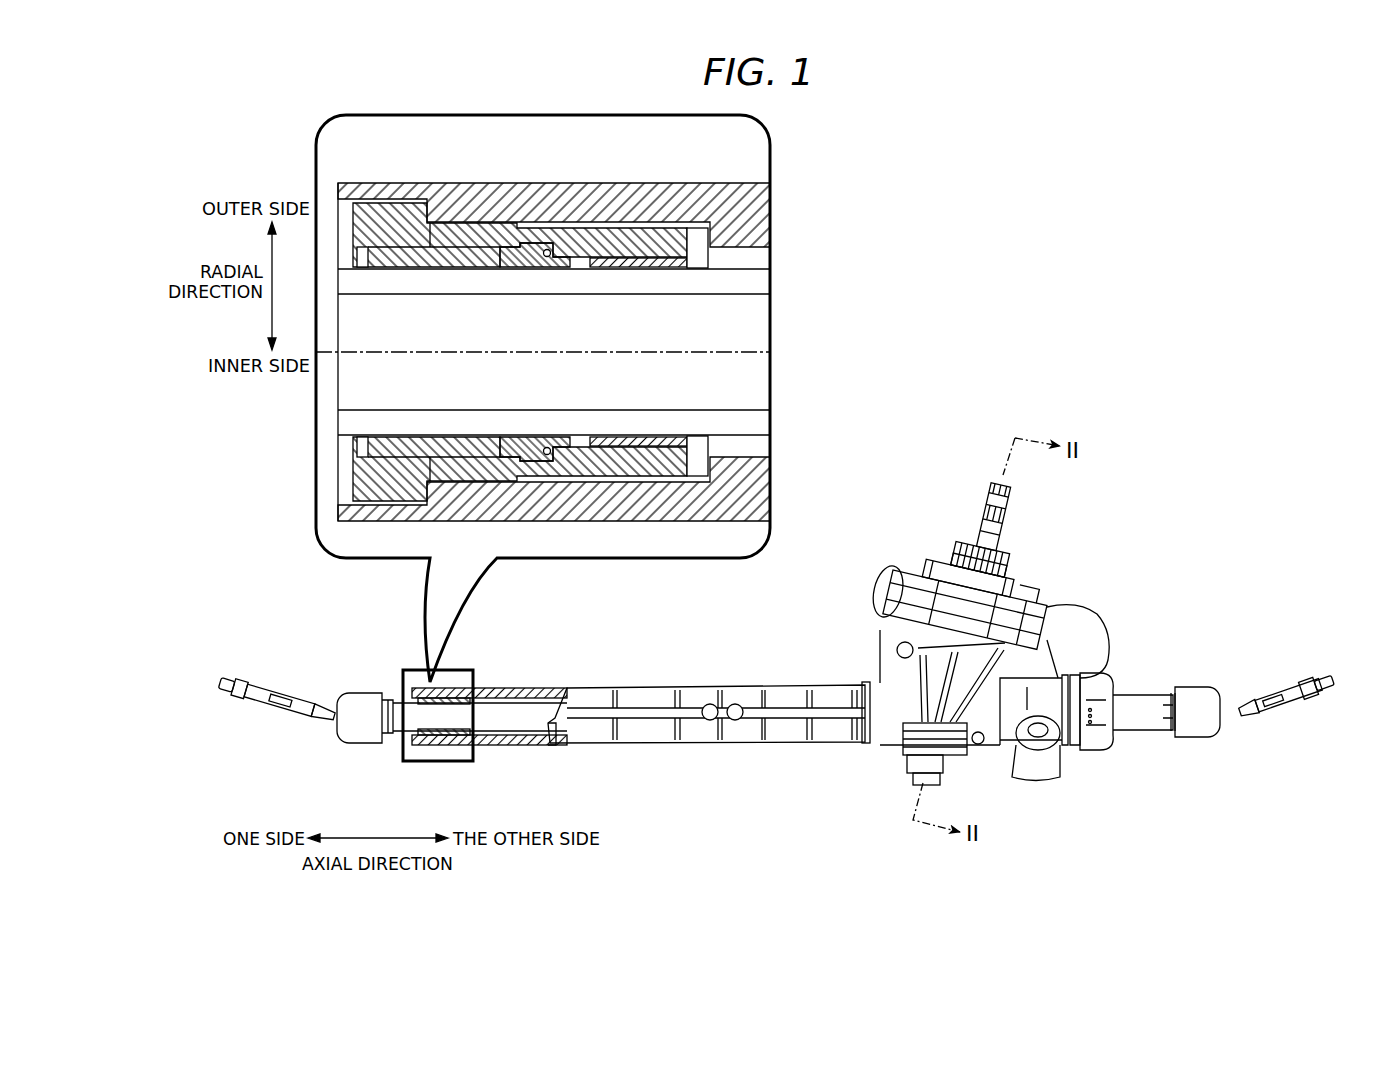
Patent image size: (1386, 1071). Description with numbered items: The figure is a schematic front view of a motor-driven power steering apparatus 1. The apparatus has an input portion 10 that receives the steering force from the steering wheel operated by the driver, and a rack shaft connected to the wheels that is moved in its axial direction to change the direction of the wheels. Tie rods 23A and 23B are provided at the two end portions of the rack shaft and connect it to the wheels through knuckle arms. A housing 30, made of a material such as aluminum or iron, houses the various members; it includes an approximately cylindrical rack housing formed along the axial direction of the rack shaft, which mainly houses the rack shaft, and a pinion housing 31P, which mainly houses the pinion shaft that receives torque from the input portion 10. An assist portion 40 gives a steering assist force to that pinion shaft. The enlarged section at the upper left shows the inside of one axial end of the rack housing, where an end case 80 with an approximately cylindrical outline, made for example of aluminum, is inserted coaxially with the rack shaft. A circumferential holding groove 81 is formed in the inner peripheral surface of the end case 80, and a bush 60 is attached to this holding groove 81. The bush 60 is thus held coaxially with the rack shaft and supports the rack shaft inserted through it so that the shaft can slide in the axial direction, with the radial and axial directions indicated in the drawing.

The motor-driven power steering apparatus 1 is at (777, 611).
The input portion 10 is at (1015, 506).
The tie rod 23A is at (231, 678).
The tie rod 23B is at (1326, 672).
The housing 30 is at (734, 635).
The pinion housing 31P is at (893, 600).
The assist portion 40 is at (1092, 609).
The bush 60 is at (522, 240).
The end case 80 is at (475, 222).
The holding groove 81 is at (550, 251).